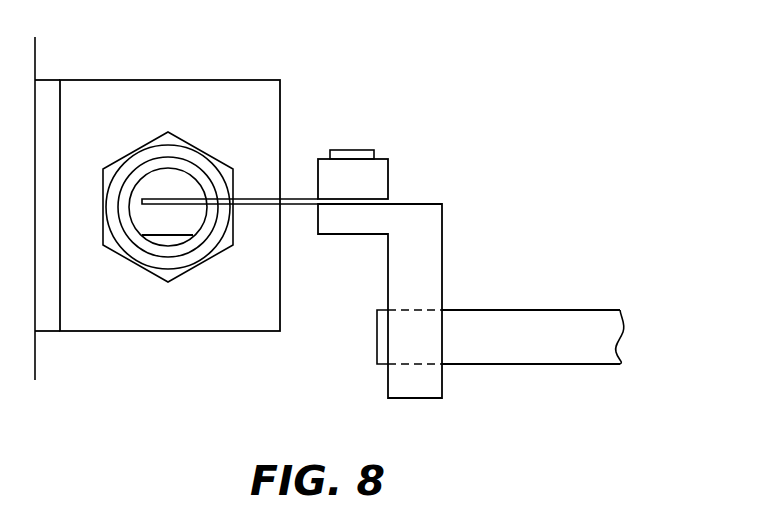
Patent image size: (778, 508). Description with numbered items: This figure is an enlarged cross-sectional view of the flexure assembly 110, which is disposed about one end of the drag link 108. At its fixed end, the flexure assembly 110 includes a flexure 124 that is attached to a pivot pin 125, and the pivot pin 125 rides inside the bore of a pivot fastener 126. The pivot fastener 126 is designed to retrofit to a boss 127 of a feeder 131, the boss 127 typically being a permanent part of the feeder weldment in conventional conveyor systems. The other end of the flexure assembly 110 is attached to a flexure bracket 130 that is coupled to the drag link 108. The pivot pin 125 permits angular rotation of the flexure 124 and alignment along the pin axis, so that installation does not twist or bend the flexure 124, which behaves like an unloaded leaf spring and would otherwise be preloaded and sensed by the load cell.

The drag link 108 is at (547, 328).
The flexure assembly 110 is at (422, 90).
The flexure 124 is at (300, 198).
The pivot pin 125 is at (150, 222).
The pivot fastener 126 is at (143, 150).
The boss 127 is at (210, 102).
The flexure bracket 130 is at (410, 242).
The feeder 131 is at (36, 81).